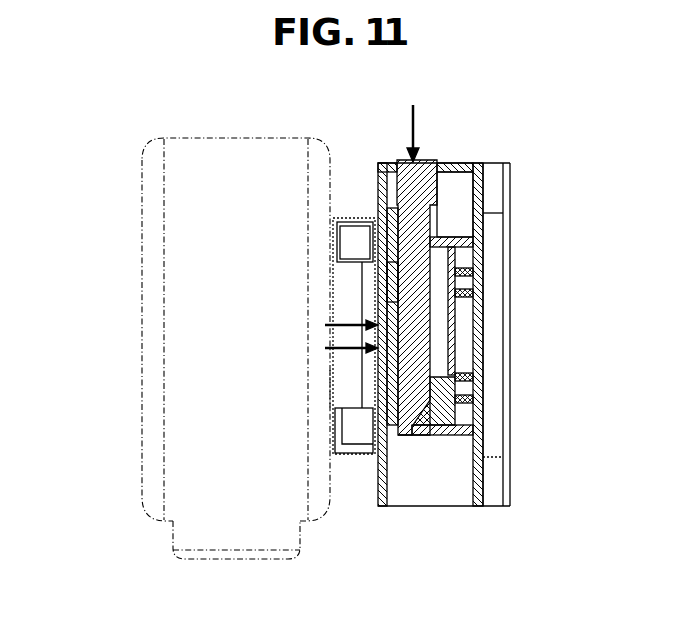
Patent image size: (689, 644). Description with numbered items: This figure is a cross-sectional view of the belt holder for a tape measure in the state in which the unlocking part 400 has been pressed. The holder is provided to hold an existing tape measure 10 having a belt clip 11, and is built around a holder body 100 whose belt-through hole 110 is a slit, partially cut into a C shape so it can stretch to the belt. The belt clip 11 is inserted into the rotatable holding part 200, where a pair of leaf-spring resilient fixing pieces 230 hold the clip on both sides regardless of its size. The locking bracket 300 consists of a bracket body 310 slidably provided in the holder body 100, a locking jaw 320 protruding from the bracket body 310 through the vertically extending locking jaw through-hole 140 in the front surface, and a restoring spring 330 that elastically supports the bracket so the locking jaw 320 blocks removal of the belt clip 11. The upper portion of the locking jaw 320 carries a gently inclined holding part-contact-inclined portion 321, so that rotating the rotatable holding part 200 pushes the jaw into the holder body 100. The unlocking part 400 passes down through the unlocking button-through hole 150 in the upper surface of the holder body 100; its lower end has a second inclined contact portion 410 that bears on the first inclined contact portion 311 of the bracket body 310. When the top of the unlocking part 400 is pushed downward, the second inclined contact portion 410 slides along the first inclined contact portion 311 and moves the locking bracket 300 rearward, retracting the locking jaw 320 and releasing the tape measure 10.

The tape measure 10 is at (140, 472).
The belt clip 11 is at (345, 391).
The holder body 100 is at (445, 510).
The belt-through hole 110 is at (497, 343).
The locking jaw through-hole 140 is at (428, 262).
The unlocking button-through hole 150 is at (437, 191).
The rotatable holding part 200 is at (352, 218).
The resilient fixing pieces 230 is at (353, 240).
The locking bracket 300 is at (376, 375).
The bracket body 310 is at (447, 410).
The first inclined contact portion 311 is at (450, 378).
The locking jaw 320 is at (380, 320).
The holding part-contact-inclined portion 321 is at (382, 279).
The restoring spring 330 is at (457, 292).
The unlocking part 400 is at (413, 176).
The second inclined contact portion 410 is at (423, 428).